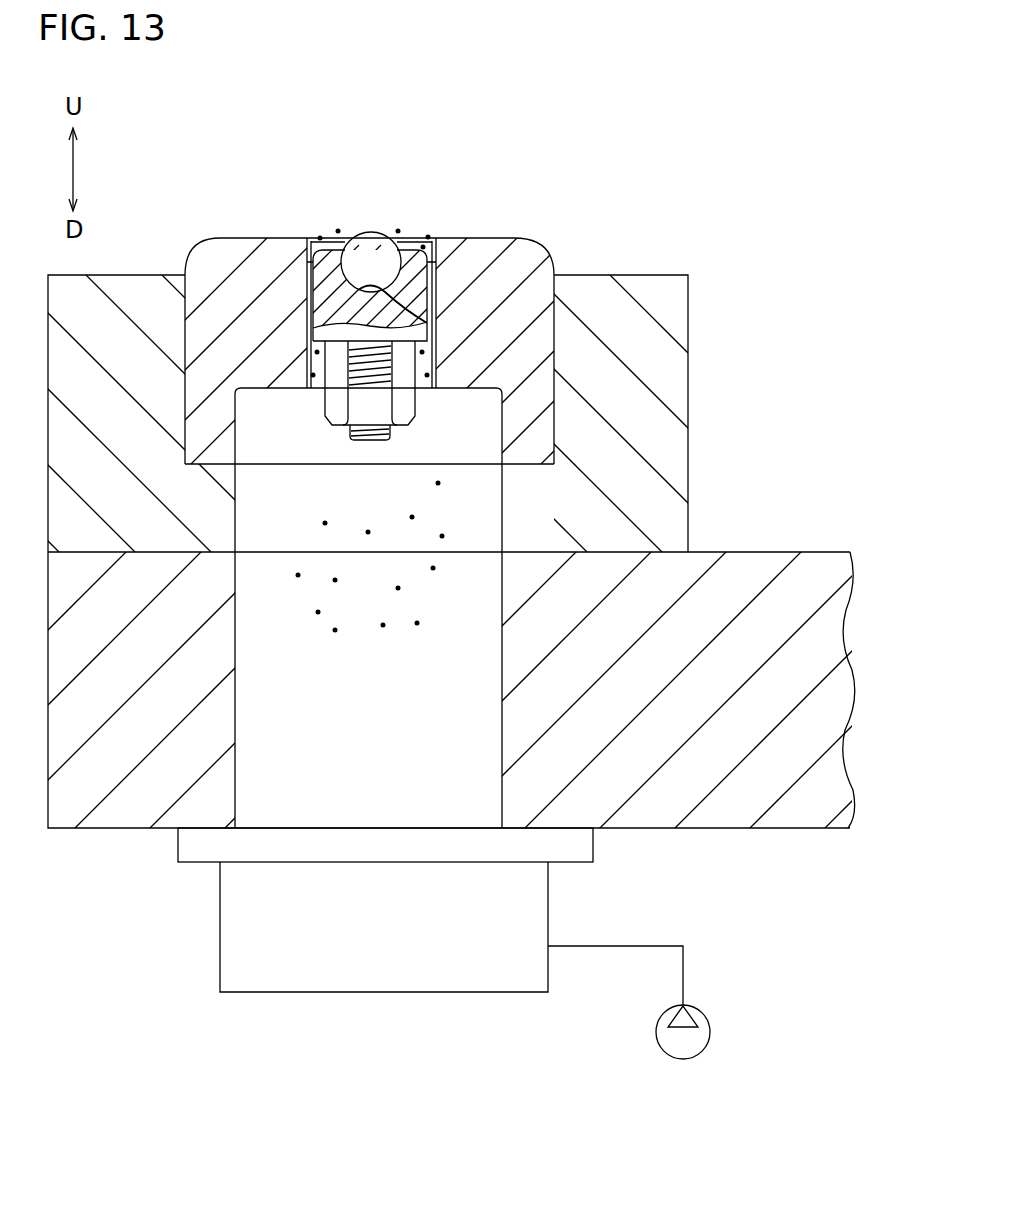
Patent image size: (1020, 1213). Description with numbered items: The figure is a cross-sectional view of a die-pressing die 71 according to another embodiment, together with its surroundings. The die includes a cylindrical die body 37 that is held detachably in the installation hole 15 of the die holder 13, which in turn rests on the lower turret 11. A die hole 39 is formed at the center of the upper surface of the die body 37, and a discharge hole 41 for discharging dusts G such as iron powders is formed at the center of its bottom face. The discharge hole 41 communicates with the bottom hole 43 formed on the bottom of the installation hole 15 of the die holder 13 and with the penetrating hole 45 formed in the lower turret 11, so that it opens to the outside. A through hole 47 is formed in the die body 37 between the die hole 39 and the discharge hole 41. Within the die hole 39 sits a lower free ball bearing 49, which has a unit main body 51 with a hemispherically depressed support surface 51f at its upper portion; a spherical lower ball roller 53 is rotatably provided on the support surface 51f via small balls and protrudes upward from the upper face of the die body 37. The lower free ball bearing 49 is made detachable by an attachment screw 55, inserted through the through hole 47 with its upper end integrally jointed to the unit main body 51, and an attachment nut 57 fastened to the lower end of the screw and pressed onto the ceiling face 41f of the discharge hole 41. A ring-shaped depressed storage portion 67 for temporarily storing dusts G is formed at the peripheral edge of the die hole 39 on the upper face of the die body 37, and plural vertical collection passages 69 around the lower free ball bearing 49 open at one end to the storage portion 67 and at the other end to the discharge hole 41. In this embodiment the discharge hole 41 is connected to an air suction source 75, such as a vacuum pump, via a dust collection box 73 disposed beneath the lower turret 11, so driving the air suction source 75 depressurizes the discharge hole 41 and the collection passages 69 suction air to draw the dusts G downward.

The lower turret 11 is at (783, 552).
The die holder 13 is at (650, 278).
The installation hole 15 is at (542, 427).
The die body 37 is at (533, 240).
The die hole 39 is at (323, 298).
The discharge hole 41 is at (273, 443).
The ceiling face of the discharge hole 41f is at (347, 365).
The bottom hole 43 is at (492, 487).
The penetrating hole 45 is at (492, 607).
The through hole 47 is at (390, 365).
The lower free ball bearing 49 is at (413, 243).
The unit main body 51 is at (426, 292).
The support surface 51f is at (420, 315).
The lower ball roller 53 is at (370, 236).
The attachment screw 55 is at (362, 430).
The attachment nut 57 is at (402, 433).
The depressed storage portion 67 is at (433, 253).
The collection passages 69 is at (428, 362).
The die-pressing die 71 is at (527, 168).
The dust collection box 73 is at (367, 994).
The air suction source 75 is at (711, 1028).
The dusts G is at (338, 232).